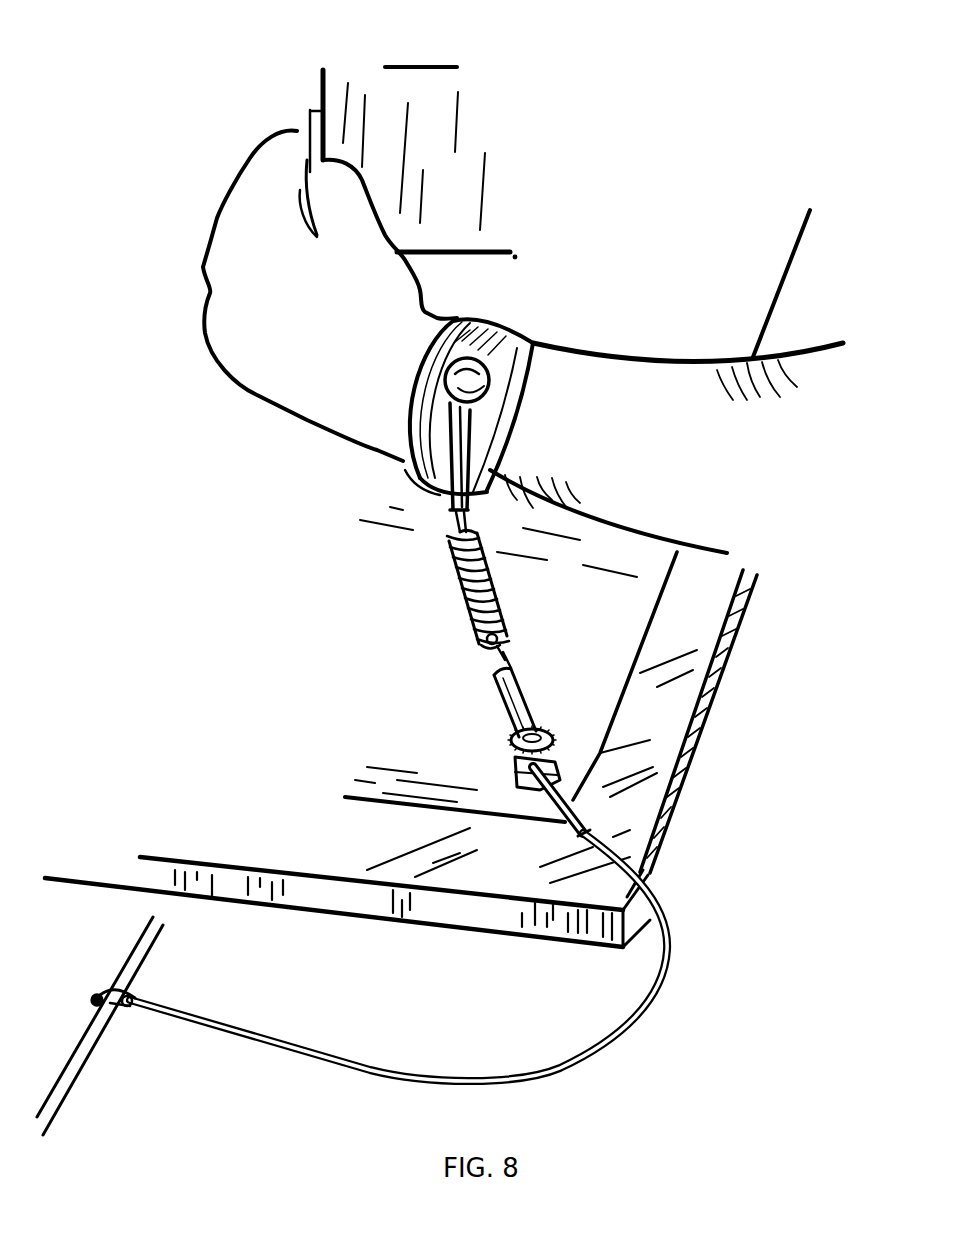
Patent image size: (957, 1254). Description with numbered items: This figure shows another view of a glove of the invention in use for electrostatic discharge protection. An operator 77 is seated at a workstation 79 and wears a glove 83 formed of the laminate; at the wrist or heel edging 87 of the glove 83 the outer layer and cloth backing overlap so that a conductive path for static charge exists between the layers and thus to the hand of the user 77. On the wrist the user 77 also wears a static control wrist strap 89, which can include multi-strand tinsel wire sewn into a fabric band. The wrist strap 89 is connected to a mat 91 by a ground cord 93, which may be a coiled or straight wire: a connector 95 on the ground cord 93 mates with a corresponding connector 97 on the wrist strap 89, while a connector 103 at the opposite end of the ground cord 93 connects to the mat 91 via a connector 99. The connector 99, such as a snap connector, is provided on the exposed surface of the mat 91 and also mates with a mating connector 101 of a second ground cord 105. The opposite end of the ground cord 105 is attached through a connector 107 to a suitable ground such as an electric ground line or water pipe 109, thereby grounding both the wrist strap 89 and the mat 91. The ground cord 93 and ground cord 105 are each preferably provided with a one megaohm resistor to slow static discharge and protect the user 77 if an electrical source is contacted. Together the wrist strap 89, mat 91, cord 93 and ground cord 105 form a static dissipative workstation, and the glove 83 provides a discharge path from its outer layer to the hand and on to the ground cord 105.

The operator 77 is at (690, 347).
The workstation 79 is at (617, 68).
The glove 83 is at (308, 415).
The wrist or heel edging 87 is at (405, 478).
The static control wrist strap 89 is at (488, 323).
The mat 91 is at (592, 618).
The ground cord 93 is at (455, 585).
The connector 95 is at (493, 412).
The connector 97 is at (500, 323).
The connector 99 is at (520, 782).
The mating connector 101 is at (513, 765).
The connector 103 is at (515, 737).
The ground cord 105 is at (472, 1070).
The connector 107 is at (133, 995).
The water pipe 109 is at (97, 992).